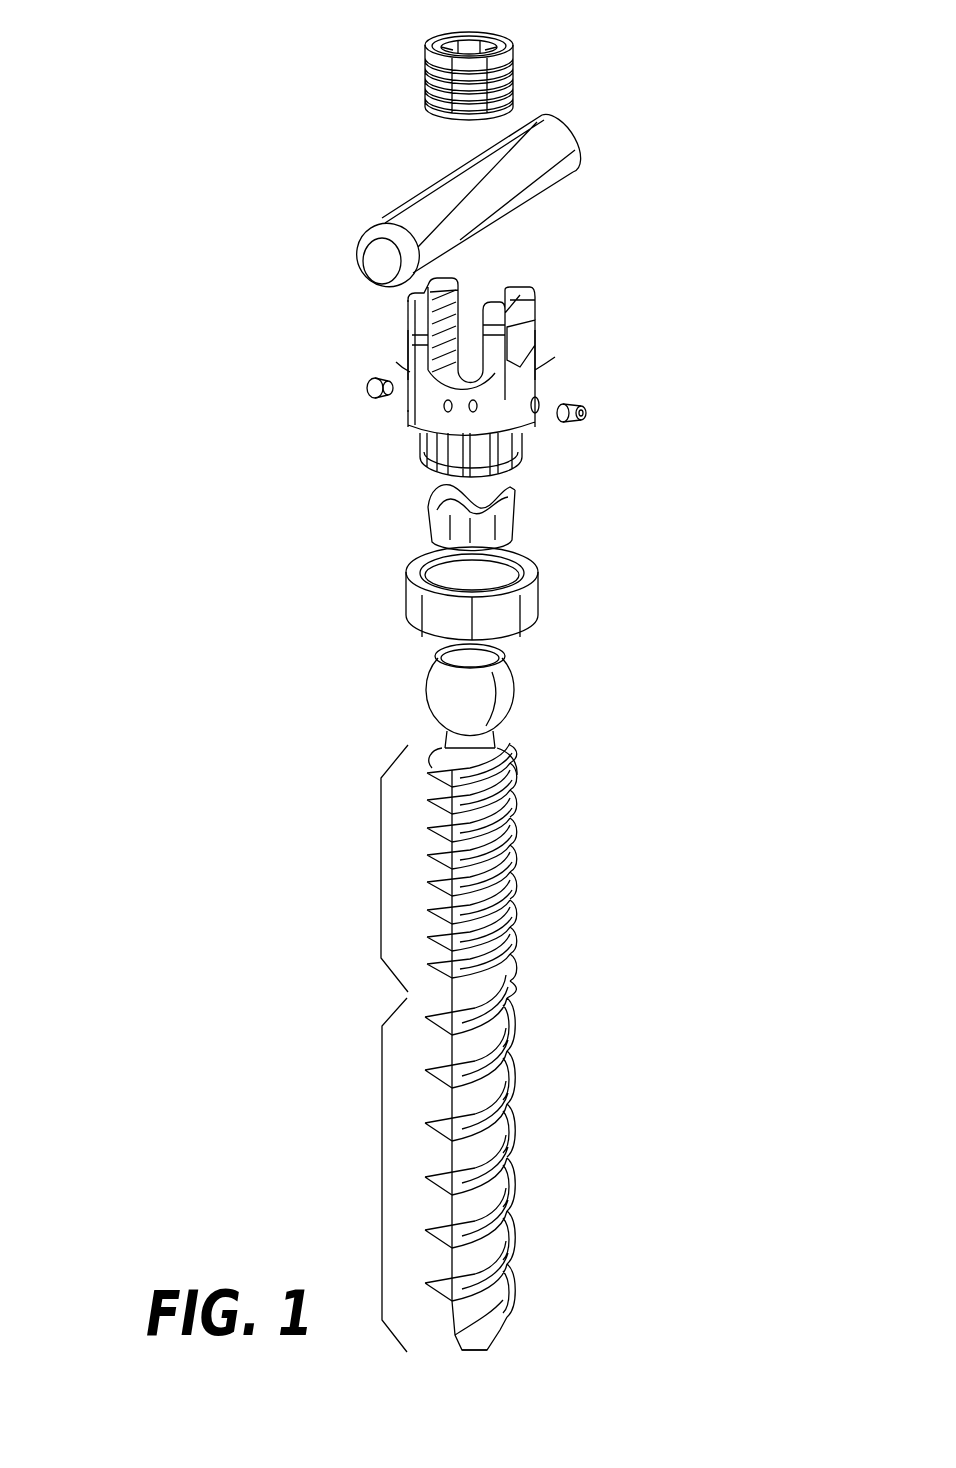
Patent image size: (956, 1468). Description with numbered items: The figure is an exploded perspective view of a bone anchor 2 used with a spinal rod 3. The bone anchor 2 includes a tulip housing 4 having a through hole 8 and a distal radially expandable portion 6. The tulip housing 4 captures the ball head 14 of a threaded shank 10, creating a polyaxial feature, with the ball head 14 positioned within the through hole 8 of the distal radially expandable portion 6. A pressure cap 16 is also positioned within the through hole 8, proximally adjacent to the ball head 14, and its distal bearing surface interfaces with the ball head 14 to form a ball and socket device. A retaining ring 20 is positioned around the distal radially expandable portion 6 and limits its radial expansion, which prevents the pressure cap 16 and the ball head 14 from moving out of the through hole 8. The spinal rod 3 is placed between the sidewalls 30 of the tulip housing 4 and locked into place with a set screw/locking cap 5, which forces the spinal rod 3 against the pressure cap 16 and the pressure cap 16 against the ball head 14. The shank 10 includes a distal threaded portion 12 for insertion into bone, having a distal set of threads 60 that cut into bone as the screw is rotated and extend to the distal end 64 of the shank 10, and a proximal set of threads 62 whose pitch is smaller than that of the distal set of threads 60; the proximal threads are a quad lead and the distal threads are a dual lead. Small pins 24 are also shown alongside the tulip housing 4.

The bone anchor 2 is at (145, 356).
The spinal rod 3 is at (540, 177).
The tulip housing 4 is at (700, 292).
The set screw/locking cap 5 is at (510, 40).
The distal radially expandable portion 6 is at (410, 434).
The through hole 8 is at (465, 328).
The threaded shank 10 is at (727, 770).
The distal threaded portion 12 is at (550, 1063).
The ball head 14 is at (540, 681).
The pressure cap 16 is at (412, 514).
The retaining ring 20 is at (553, 589).
The pin 24 is at (576, 425).
The sidewalls 30 is at (418, 365).
The distal set of threads 60 is at (382, 1188).
The proximal set of threads 62 is at (381, 872).
The distal end 64 is at (487, 1350).